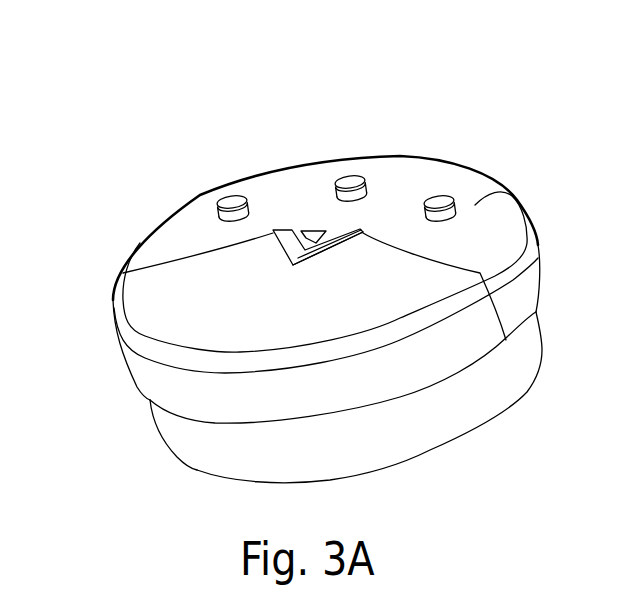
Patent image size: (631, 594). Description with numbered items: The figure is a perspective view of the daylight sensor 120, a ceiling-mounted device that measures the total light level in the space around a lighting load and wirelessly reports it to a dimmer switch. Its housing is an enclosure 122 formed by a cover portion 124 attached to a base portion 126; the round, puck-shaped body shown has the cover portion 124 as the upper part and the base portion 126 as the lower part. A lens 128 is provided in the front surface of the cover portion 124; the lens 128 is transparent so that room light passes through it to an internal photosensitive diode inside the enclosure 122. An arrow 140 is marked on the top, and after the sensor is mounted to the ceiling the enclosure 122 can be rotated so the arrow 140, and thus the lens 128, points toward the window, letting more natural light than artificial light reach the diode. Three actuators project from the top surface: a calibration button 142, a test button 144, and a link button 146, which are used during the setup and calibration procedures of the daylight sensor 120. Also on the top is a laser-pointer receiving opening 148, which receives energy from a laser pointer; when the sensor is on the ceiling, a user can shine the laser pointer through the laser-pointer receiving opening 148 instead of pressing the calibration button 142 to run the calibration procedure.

The daylight sensor 120 is at (144, 139).
The enclosure 122 is at (500, 190).
The cover portion 124 is at (372, 224).
The base portion 126 is at (197, 449).
The lens 128 is at (259, 324).
The arrow 140 is at (318, 250).
The calibration button 142 is at (232, 196).
The test button 144 is at (350, 176).
The link button 146 is at (439, 196).
The laser-pointer receiving opening 148 is at (313, 231).